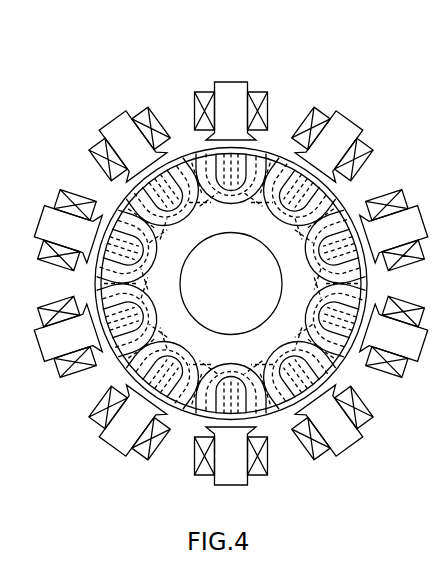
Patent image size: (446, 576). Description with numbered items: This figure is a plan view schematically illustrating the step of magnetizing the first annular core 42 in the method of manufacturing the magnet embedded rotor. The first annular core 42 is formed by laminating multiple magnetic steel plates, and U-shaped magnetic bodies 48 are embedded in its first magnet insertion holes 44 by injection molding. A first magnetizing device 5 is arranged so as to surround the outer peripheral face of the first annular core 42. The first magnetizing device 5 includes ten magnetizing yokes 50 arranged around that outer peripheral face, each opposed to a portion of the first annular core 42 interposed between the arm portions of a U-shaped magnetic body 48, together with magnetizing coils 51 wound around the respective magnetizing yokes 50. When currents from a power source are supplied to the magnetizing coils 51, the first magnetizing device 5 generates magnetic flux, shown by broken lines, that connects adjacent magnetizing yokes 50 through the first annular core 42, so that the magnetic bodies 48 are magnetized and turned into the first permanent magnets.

The first magnetizing device 5 is at (366, 69).
The first annular core 42 is at (367, 287).
The first magnet insertion holes 44 is at (228, 204).
The magnetic bodies 48 is at (263, 156).
The magnetizing yokes 50 is at (231, 88).
The magnetizing coils 51 is at (261, 92).